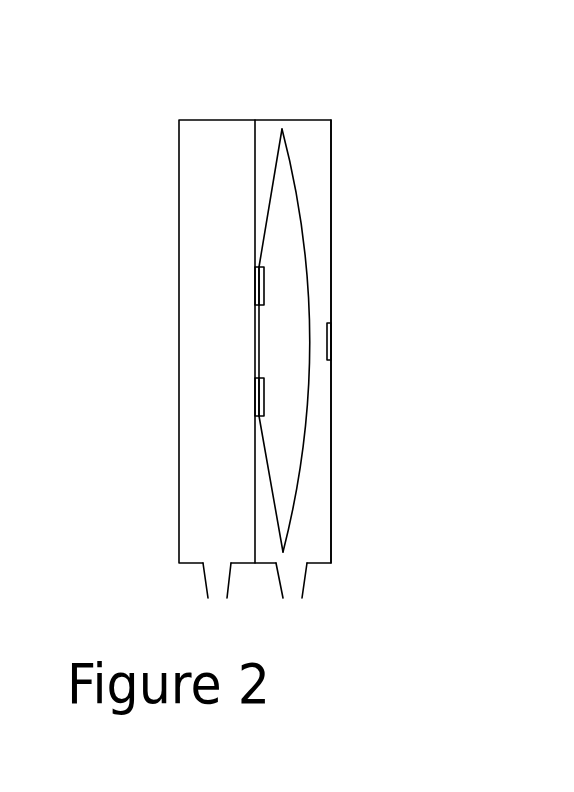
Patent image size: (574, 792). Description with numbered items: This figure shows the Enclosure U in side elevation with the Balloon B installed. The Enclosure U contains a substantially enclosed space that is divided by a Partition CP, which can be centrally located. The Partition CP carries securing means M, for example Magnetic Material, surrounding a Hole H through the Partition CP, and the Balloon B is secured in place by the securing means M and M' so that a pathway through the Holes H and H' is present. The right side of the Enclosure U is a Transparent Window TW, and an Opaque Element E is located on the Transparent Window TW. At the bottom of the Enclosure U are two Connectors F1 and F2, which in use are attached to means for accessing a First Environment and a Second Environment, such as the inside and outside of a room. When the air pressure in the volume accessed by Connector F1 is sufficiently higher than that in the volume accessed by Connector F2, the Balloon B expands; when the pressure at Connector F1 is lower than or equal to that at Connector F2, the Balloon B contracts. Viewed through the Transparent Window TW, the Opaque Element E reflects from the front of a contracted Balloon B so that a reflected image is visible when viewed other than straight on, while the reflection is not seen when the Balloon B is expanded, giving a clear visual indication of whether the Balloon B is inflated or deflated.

The Enclosure U is at (308, 119).
The Transparent Window TW is at (330, 298).
The Partition CP is at (253, 167).
The Balloon B is at (298, 207).
The securing means (Magnetic Material) M is at (171, 321).
The securing means M' is at (337, 321).
The Opaque Element E is at (331, 335).
The Hole H is at (250, 335).
The Hole H' is at (276, 350).
The Connector F1 is at (203, 587).
The Connector F2 is at (305, 582).